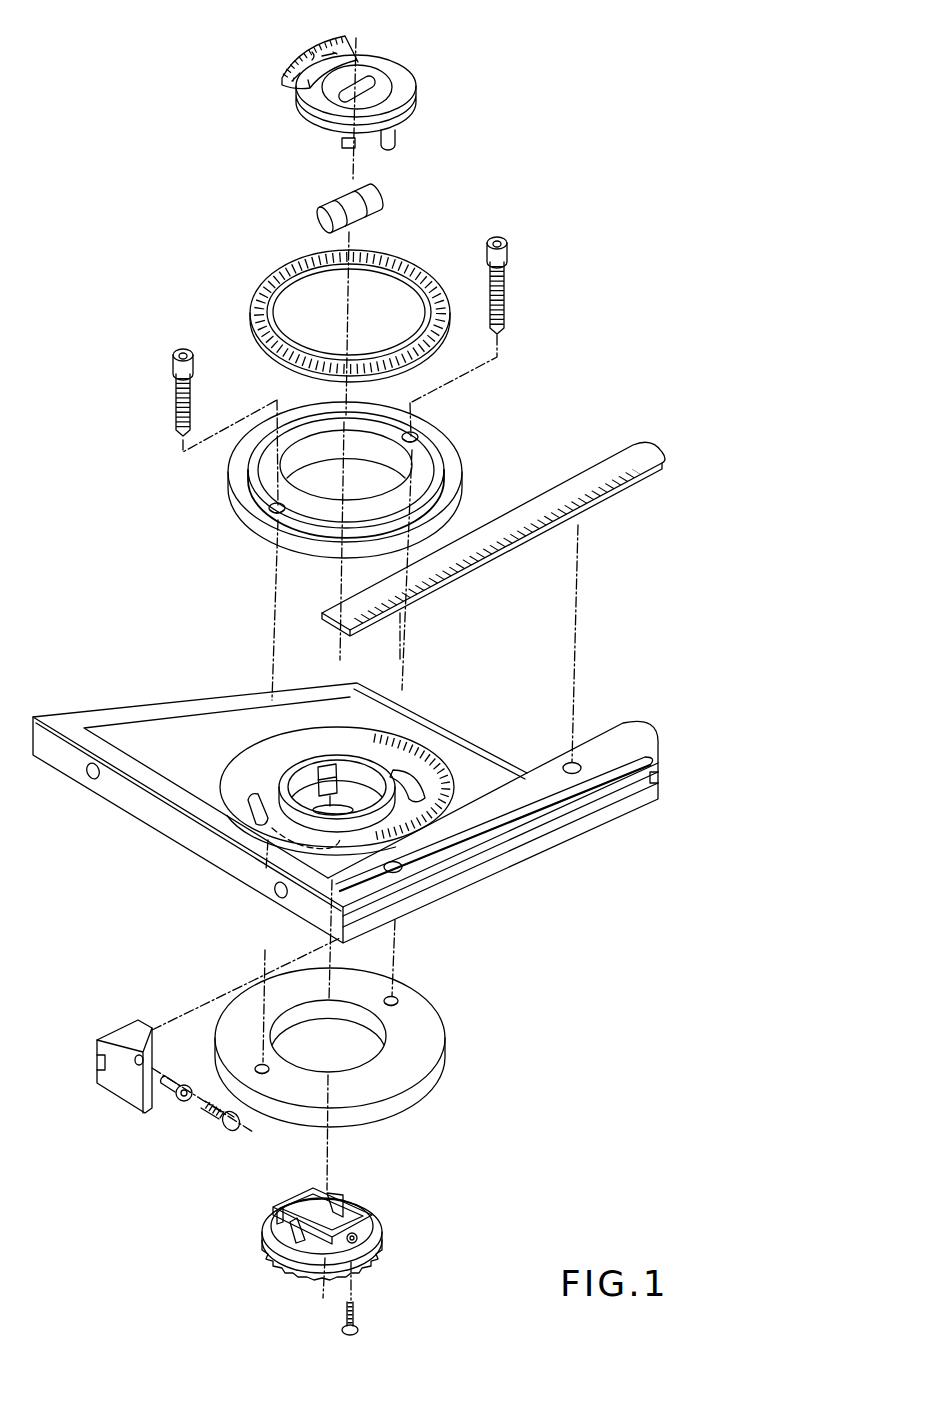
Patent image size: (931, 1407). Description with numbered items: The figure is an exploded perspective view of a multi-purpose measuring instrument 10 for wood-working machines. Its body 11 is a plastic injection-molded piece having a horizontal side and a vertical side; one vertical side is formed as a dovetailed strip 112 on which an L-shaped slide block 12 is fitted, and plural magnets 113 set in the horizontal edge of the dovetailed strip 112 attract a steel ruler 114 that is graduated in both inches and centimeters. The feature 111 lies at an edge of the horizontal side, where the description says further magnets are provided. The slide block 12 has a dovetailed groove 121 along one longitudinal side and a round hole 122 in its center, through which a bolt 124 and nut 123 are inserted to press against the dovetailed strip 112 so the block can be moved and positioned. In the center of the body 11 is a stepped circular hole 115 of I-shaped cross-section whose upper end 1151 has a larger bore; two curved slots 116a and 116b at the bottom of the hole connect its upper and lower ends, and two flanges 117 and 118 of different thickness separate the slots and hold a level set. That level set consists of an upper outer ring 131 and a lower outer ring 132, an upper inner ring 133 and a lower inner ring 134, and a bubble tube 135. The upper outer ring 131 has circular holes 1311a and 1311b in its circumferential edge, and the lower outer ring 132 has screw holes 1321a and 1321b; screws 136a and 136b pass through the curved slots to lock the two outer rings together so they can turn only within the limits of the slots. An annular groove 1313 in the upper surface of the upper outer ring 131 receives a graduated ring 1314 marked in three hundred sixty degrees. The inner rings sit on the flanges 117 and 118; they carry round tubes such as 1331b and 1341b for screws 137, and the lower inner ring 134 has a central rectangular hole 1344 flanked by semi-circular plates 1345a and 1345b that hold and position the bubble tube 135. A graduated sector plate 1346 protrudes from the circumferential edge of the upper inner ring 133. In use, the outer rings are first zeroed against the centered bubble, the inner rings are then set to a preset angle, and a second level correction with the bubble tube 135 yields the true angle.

The multi-purpose measuring instrument 10 is at (622, 600).
The body 11 is at (345, 795).
The hole 111 is at (92, 780).
The dovetailed strip 112 is at (515, 840).
The magnets 113 is at (551, 735).
The steel ruler 114 is at (628, 490).
The stepped circular hole 115 is at (427, 747).
The upper end 1151 is at (240, 775).
The curved slot 116a is at (253, 820).
The curved slot 116b is at (410, 793).
The flange 117 is at (307, 780).
The flange 118 is at (335, 787).
The slide block 12 is at (109, 1082).
The dovetailed groove 121 is at (98, 1064).
The round hole 122 is at (143, 1060).
The nut 123 is at (173, 1094).
The bolt 124 is at (233, 1126).
The upper outer ring 131 is at (355, 478).
The circular hole 1311a is at (280, 515).
The circular hole 1311b is at (414, 435).
The annular groove 1313 is at (433, 490).
The graduated ring 1314 is at (418, 267).
The lower outer ring 132 is at (347, 1051).
The screw hole 1321a is at (268, 1076).
The screw hole 1321b is at (397, 1002).
The upper inner ring 133 is at (404, 83).
The round tube 1331b is at (398, 143).
The lower inner ring 134 is at (333, 1223).
The round tube 1341b is at (373, 1240).
The rectangular hole 1344 is at (270, 1208).
The semi-circular plate 1345a is at (300, 1233).
The semi-circular plate 1345b is at (342, 1207).
The indicator scale 1346 is at (313, 45).
The bubble tube 135 is at (328, 204).
The screw 136a is at (172, 388).
The screw 136b is at (507, 277).
The screws 137 is at (363, 1337).